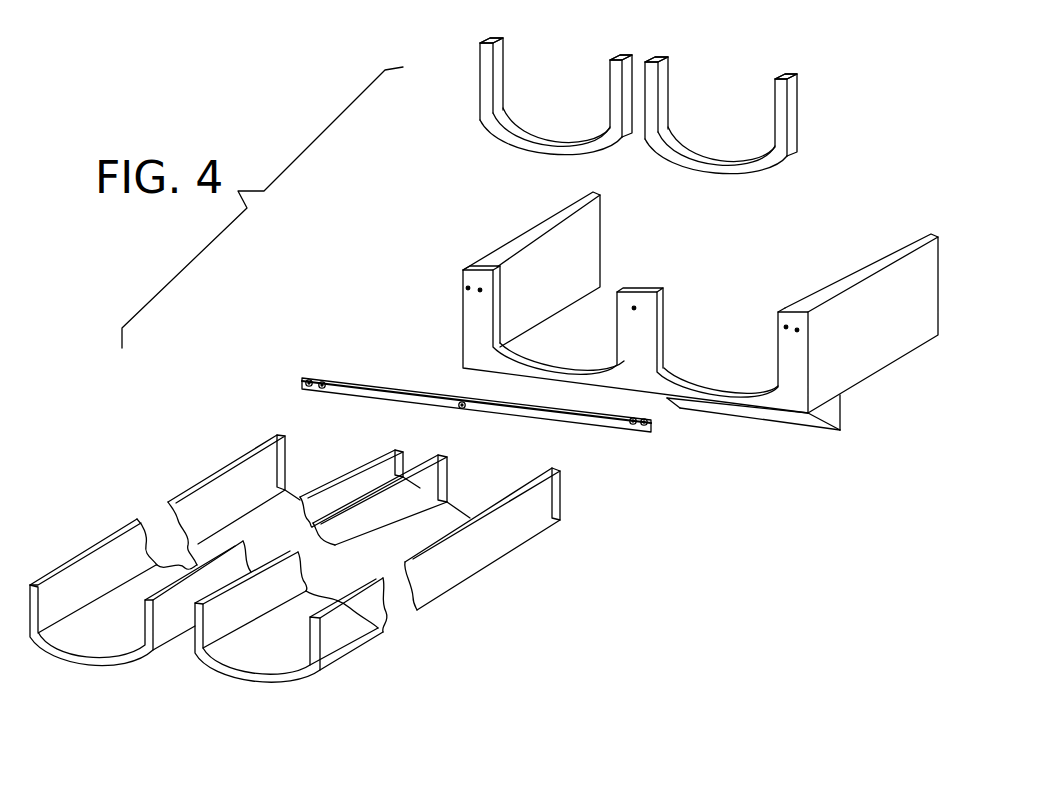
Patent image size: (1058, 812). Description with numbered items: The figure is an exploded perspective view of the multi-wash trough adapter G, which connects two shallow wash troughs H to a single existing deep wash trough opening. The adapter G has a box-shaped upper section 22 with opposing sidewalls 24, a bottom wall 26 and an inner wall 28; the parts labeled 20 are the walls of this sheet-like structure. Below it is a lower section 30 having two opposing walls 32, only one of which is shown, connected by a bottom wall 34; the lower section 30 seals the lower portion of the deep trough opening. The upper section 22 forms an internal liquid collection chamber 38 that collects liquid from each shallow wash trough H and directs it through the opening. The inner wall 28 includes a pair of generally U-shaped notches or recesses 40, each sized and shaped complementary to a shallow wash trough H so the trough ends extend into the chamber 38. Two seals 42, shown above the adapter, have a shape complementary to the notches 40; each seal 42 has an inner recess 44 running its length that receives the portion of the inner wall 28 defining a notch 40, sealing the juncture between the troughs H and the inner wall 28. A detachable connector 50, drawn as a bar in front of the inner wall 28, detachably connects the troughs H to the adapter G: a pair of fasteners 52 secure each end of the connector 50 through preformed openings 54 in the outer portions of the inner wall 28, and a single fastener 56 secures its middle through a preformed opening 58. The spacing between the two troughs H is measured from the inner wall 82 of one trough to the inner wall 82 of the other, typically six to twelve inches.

The wall plate 20 is at (706, 307).
The upper section 22 is at (512, 230).
The sidewalls 24 is at (544, 274).
The bottom wall 26 is at (758, 313).
The inner wall 28 is at (473, 335).
The lower section 30 is at (793, 452).
The opposing walls 32 is at (838, 417).
The bottom wall 34 is at (810, 418).
The liquid collection chamber 38 is at (694, 281).
The notches or recesses 40 is at (493, 312).
The seals 42 is at (610, 112).
The inner recess 44 is at (497, 40).
The detachable connector 50 is at (476, 401).
The fasteners 52 is at (309, 388).
The preformed openings 54 is at (480, 290).
The single fastener 56 is at (462, 408).
The preformed opening 58 is at (634, 308).
The inner wall 82 is at (162, 642).
The multi-wash trough adapter G is at (402, 221).
The shallow wash troughs H is at (520, 603).